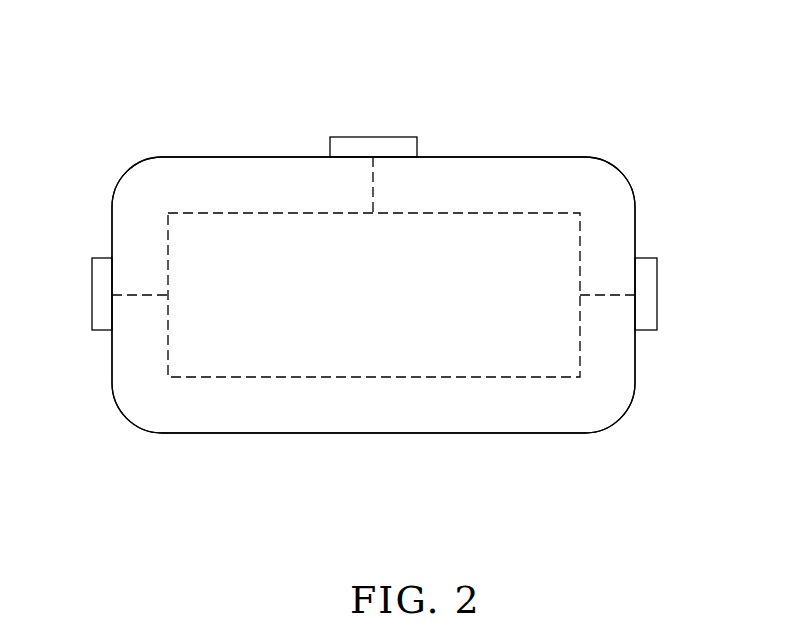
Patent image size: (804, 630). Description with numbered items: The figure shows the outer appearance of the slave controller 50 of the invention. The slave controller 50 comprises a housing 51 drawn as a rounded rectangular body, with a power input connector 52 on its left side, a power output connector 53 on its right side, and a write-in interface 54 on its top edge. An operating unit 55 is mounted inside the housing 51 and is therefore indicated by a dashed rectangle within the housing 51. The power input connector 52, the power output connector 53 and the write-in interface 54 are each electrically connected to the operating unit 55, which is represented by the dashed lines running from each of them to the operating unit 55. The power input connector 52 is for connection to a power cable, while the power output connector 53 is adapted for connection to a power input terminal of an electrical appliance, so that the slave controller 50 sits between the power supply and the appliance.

The slave controller 50 is at (518, 96).
The housing 51 is at (620, 172).
The power input connector 52 is at (92, 298).
The power output connector 53 is at (657, 295).
The write-in interface 54 is at (368, 137).
The operating unit 55 is at (582, 363).